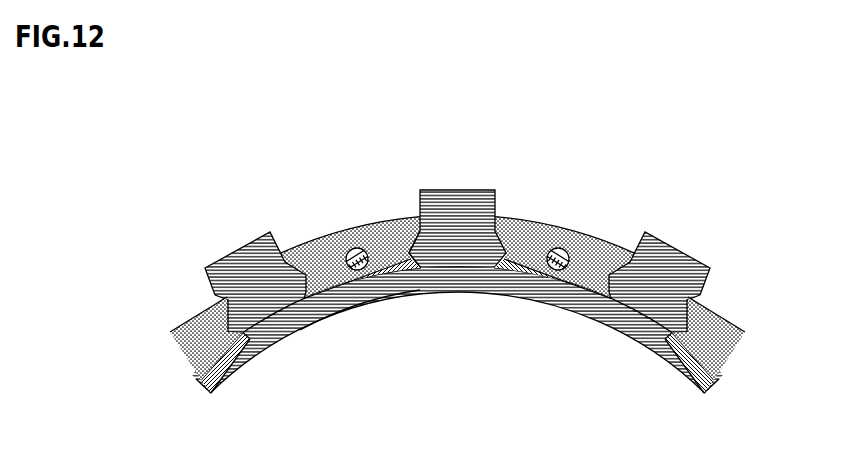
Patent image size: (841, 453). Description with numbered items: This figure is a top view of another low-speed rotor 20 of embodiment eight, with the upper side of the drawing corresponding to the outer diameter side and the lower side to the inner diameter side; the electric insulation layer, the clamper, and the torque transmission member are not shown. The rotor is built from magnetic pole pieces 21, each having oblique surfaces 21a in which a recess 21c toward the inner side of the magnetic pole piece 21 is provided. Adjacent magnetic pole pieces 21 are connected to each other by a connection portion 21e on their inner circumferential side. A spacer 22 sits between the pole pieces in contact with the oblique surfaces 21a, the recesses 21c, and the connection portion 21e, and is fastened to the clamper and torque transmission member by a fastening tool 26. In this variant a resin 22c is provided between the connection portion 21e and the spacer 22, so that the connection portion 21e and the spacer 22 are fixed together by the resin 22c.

The low-speed rotor 20 is at (130, 150).
The magnetic pole piece 21 is at (428, 206).
The oblique surface 21a is at (415, 260).
The recess 21c is at (410, 266).
The connection portion 21e is at (580, 277).
The spacer 22 is at (547, 235).
The resin 22c is at (360, 300).
The fastening tool 26 is at (563, 252).